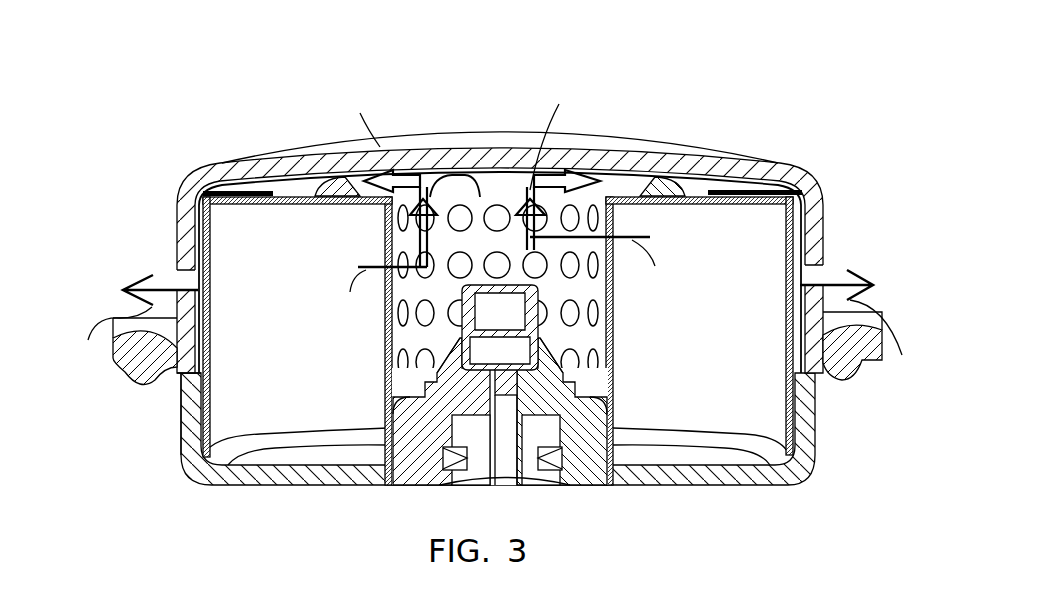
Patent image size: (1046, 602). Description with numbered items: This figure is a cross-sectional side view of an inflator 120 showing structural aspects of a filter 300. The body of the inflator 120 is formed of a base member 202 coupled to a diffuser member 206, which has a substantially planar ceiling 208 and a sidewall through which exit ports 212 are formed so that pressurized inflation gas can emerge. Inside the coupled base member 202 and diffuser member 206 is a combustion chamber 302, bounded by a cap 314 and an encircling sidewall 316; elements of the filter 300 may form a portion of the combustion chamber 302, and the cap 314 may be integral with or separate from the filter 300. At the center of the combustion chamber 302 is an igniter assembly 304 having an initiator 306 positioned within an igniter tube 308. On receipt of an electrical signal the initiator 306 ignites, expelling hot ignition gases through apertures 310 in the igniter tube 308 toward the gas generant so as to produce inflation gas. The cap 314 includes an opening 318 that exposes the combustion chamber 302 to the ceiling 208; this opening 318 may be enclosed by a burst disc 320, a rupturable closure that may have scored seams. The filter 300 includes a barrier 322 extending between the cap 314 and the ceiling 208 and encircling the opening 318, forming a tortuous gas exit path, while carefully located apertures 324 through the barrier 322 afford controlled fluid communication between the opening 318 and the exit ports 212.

The inflator 120 is at (197, 65).
The base member 202 is at (766, 478).
The diffuser member 206 is at (810, 192).
The ceiling 208 is at (505, 126).
The exit ports 212 is at (168, 265).
The filter 300 is at (327, 176).
The combustion chamber 302 is at (266, 275).
The igniter assembly 304 is at (563, 378).
The initiator 306 is at (510, 268).
The igniter tube 308 is at (428, 342).
The apertures 310 is at (376, 388).
The cap 314 is at (730, 187).
The encircling sidewall 316 is at (180, 420).
The opening 318 is at (432, 190).
The burst disc 320 is at (477, 190).
The barrier 322 is at (680, 188).
The apertures 324 is at (310, 190).